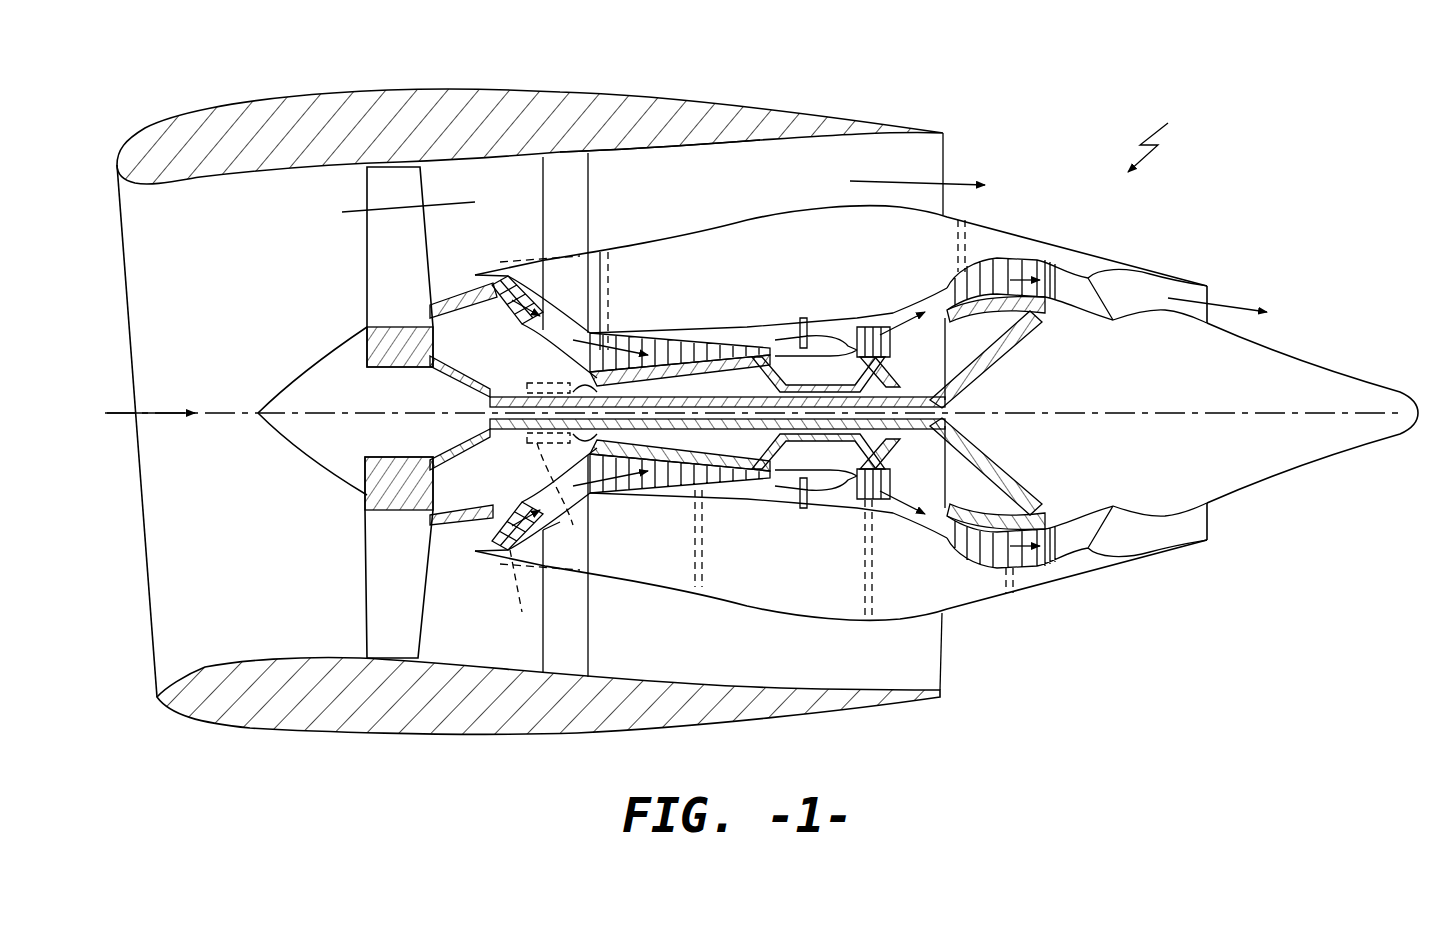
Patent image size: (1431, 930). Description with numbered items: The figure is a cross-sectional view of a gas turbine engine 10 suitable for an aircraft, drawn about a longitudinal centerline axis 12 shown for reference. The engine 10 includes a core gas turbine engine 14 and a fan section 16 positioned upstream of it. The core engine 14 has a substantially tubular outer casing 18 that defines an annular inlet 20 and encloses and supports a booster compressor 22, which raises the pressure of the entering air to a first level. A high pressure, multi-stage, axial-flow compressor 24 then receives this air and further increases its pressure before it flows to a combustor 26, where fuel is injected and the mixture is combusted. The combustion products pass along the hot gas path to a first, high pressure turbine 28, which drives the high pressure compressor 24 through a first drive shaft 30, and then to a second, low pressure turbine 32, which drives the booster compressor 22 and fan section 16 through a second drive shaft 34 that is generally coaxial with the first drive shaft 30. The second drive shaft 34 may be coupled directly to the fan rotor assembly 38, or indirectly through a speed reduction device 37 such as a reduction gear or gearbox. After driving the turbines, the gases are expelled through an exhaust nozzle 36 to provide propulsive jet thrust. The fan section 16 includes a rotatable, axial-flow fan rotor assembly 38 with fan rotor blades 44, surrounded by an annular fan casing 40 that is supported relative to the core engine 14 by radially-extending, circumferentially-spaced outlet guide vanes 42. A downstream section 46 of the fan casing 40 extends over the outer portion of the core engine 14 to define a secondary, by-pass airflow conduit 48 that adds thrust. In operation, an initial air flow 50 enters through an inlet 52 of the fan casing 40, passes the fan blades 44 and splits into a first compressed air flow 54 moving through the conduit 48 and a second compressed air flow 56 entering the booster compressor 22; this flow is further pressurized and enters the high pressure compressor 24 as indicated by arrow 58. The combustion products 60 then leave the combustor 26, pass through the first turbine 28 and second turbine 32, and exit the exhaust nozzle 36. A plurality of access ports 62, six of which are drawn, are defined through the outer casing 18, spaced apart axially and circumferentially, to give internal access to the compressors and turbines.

The gas turbine engine 10 is at (1168, 135).
The centerline axis 12 is at (1117, 410).
The core gas turbine engine 14 is at (760, 287).
The fan section 16 is at (448, 75).
The outer casing 18 is at (780, 607).
The annular inlet 20 is at (487, 553).
The booster compressor 22 is at (543, 507).
The high pressure compressor 24 is at (623, 483).
The combustor 26 is at (827, 487).
The first (high pressure) turbine 28 is at (903, 498).
The first (high pressure) drive shaft 30 is at (873, 362).
The second (low pressure) turbine 32 is at (1043, 573).
The second (low pressure) drive shaft 34 is at (543, 393).
The exhaust nozzle 36 is at (1209, 290).
The speed reduction device 37 is at (560, 518).
The fan rotor assembly 38 is at (425, 367).
The fan casing 40 is at (428, 735).
The outlet guide vanes 42 is at (590, 192).
The fan rotor blades 44 is at (362, 602).
The downstream section 46 is at (815, 123).
The by-pass airflow conduit 48 is at (745, 198).
The initial air flow 50 is at (152, 410).
The inlet 52 is at (150, 657).
The first compressed air flow 54 is at (377, 207).
The second compressed air flow 56 is at (462, 285).
The air flow into high pressure compressor 58 is at (613, 333).
The combustion products 60 is at (873, 330).
The access ports 62 is at (610, 283).